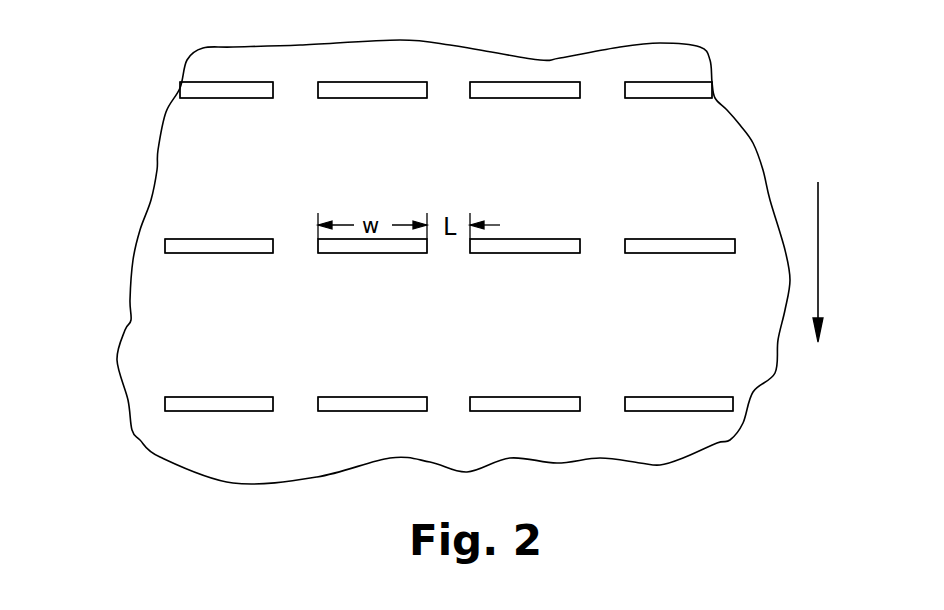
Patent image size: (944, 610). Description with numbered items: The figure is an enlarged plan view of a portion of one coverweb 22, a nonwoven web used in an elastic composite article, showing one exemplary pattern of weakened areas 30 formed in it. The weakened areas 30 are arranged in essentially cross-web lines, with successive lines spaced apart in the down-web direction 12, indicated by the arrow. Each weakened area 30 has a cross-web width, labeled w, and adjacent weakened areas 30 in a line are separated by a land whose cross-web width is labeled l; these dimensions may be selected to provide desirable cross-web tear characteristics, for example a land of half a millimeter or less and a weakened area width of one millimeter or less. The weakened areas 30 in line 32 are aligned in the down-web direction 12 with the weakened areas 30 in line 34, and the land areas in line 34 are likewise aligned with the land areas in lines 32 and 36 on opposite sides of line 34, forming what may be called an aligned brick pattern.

The down-web direction 12 is at (818, 258).
The coverweb 22 is at (753, 143).
The weakened areas 30 is at (227, 92).
The line of weakened areas 32 is at (110, 382).
The line of weakened areas 34 is at (117, 230).
The line of weakened areas 36 is at (158, 70).